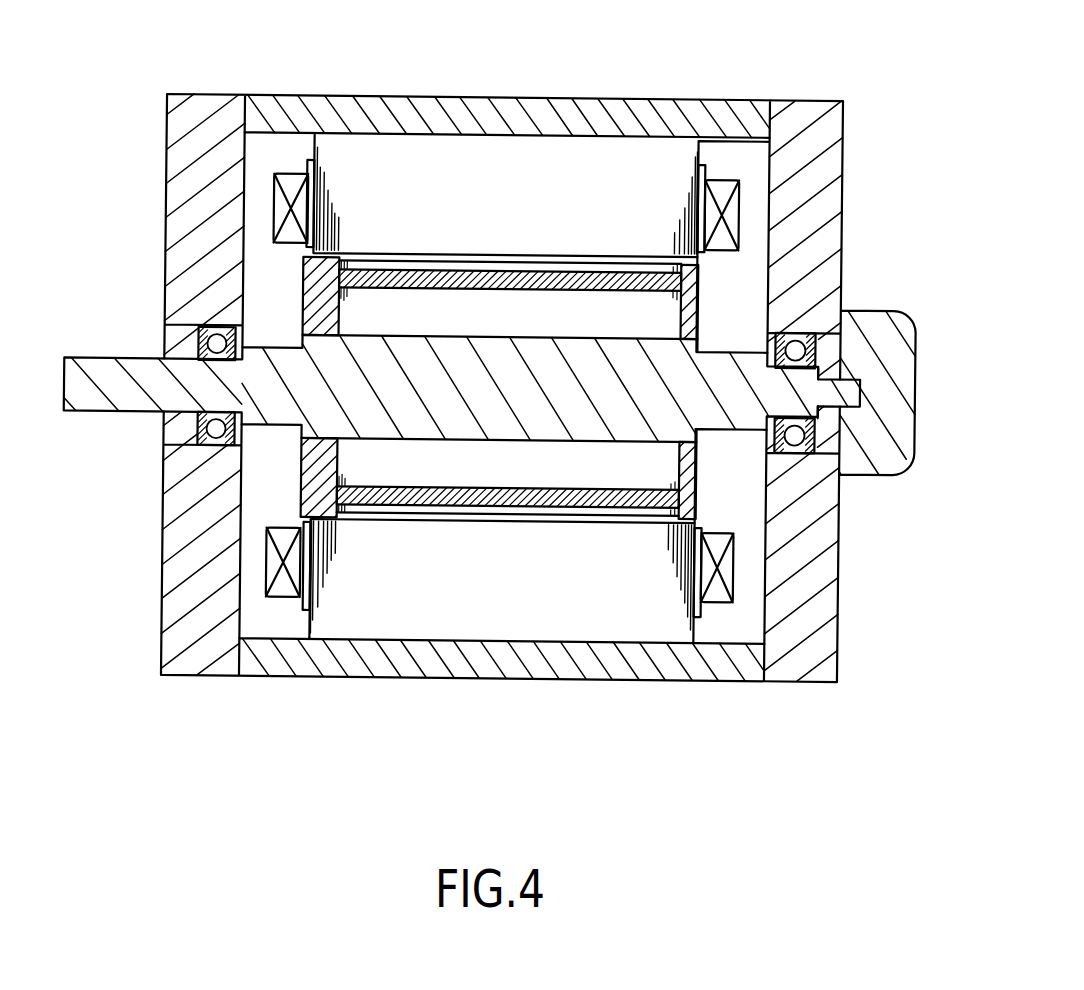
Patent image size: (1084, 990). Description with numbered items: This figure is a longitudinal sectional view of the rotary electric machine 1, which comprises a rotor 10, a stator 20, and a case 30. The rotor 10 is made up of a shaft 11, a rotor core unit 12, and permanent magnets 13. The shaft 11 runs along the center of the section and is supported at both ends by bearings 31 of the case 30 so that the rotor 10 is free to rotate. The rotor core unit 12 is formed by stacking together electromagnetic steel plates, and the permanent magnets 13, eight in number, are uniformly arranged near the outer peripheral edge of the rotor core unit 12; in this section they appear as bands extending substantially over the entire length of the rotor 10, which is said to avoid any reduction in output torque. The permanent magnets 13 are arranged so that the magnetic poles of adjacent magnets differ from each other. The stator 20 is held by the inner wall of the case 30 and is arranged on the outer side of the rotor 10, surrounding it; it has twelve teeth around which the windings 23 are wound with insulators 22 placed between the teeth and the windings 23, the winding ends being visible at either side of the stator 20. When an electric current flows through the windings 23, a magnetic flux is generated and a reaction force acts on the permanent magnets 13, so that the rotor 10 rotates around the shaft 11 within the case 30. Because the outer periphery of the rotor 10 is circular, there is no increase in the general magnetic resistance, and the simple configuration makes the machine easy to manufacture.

The rotary electric machine 1 is at (867, 84).
The rotor 10 is at (360, 318).
The shaft 11 is at (642, 401).
The rotor core unit 12 is at (665, 318).
The permanent magnets 13 is at (680, 280).
The stator 20 is at (467, 187).
The insulators 22 is at (703, 168).
The windings 23 is at (730, 211).
The case 30 is at (195, 153).
The bearings 31 is at (213, 433).